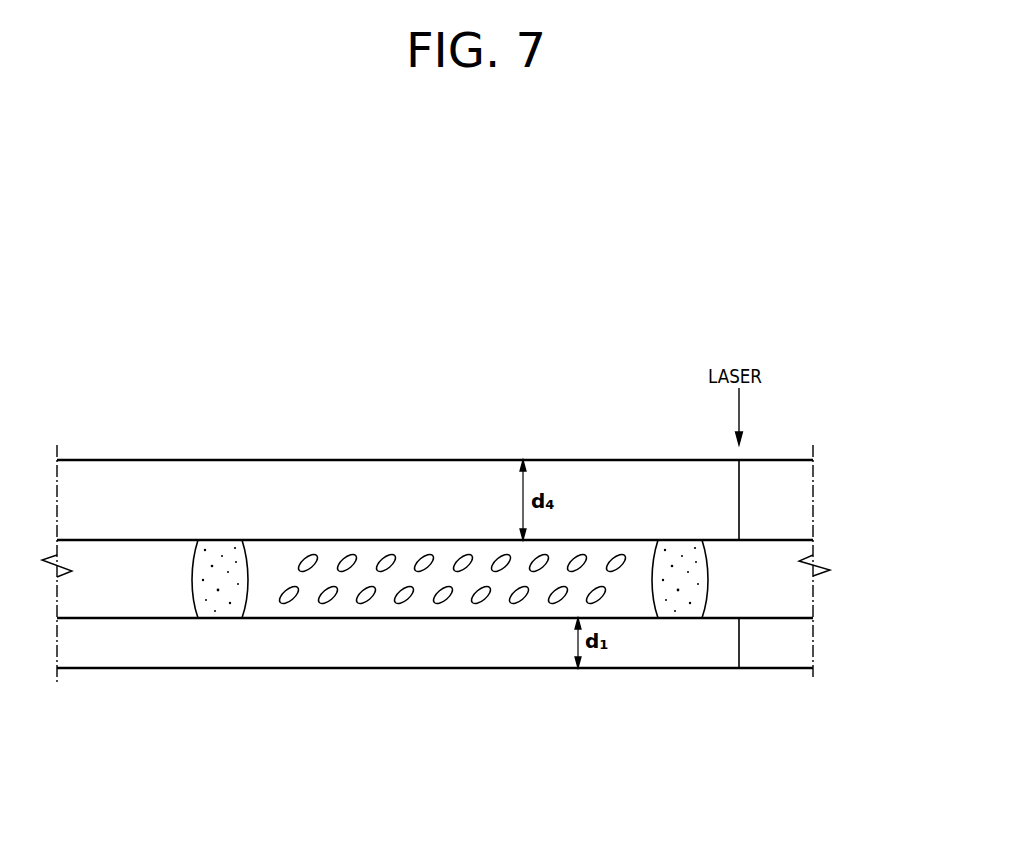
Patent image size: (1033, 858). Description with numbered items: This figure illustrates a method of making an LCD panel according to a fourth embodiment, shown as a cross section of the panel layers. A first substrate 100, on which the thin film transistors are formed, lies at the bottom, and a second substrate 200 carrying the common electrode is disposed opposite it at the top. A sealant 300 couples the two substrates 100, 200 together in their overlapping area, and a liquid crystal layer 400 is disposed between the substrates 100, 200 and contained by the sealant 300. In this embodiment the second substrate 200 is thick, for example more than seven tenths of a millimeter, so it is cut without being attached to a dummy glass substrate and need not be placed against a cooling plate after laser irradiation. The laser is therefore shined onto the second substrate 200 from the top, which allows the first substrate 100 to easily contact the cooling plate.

The first substrate 100 is at (805, 638).
The second substrate 200 is at (809, 505).
The sealant 300 is at (702, 585).
The liquid crystal layer 400 is at (367, 598).